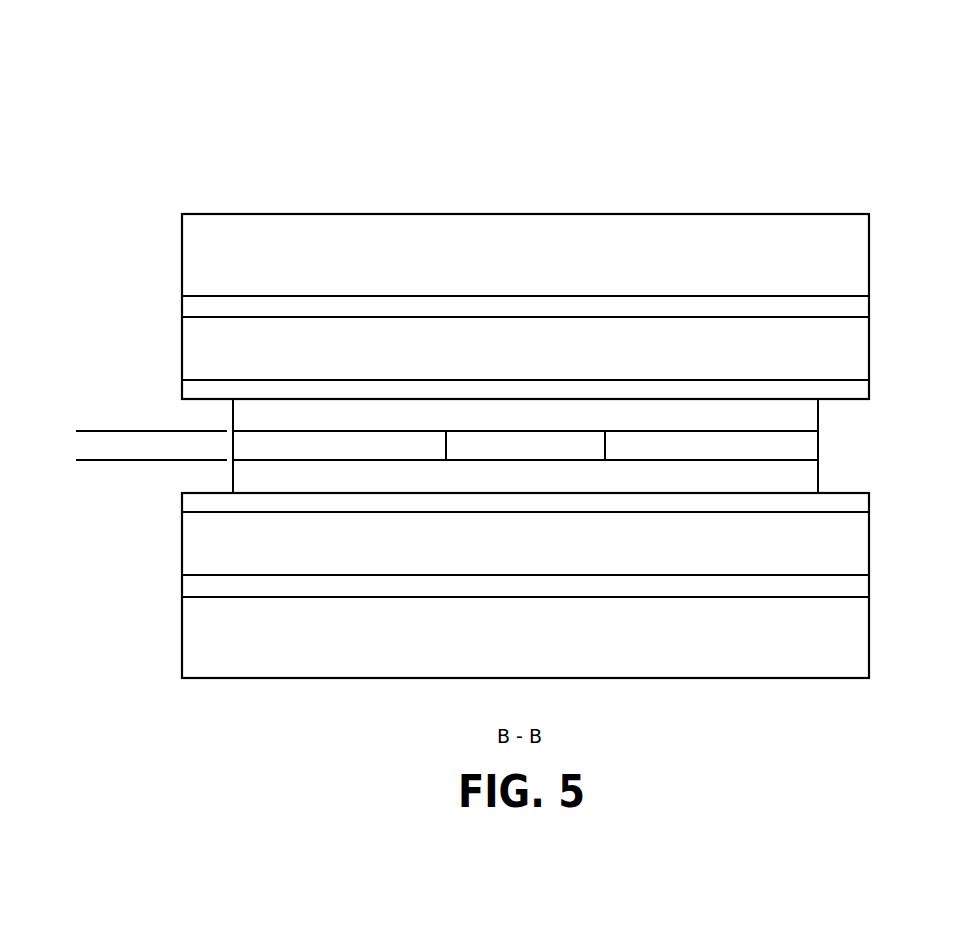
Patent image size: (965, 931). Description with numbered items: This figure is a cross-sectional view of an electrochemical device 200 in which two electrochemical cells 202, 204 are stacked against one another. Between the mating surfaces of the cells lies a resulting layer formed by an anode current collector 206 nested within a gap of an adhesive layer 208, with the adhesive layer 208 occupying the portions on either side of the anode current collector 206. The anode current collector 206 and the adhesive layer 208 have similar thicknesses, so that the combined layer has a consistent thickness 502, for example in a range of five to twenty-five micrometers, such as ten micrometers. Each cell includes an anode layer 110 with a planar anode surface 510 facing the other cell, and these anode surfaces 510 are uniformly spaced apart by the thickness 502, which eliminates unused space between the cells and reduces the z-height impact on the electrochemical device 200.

The electrochemical device 200 is at (263, 92).
The electrochemical cell 202 is at (878, 215).
The electrochemical cell 204 is at (878, 463).
The anode current collector 206 is at (505, 443).
The adhesive layer 208 is at (290, 442).
The anode layer 110 is at (671, 472).
The anode surface 510 is at (388, 433).
The thickness 502 is at (92, 400).